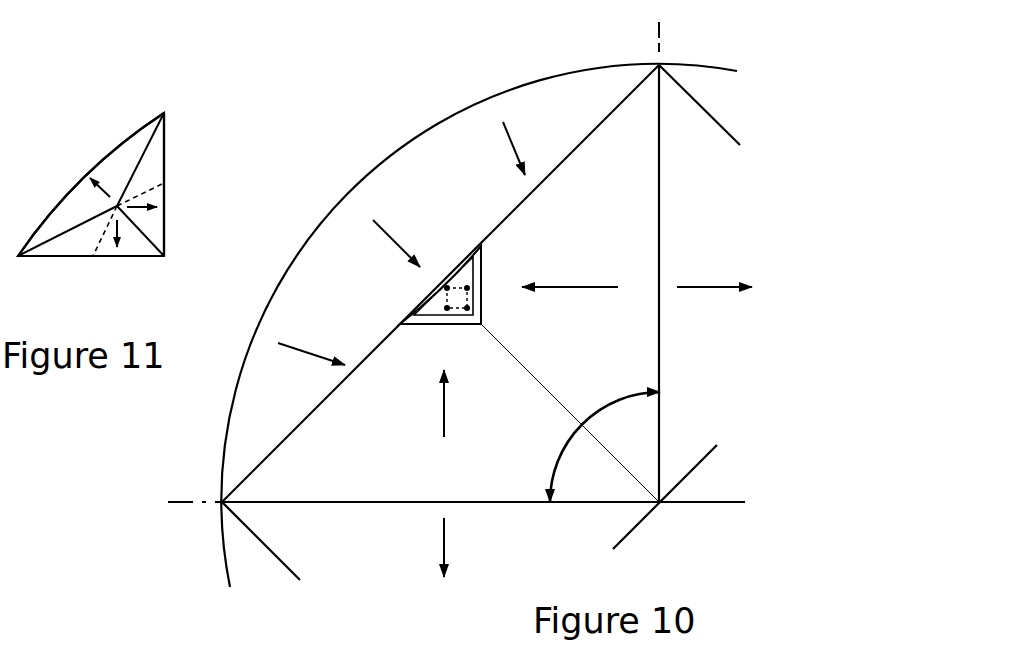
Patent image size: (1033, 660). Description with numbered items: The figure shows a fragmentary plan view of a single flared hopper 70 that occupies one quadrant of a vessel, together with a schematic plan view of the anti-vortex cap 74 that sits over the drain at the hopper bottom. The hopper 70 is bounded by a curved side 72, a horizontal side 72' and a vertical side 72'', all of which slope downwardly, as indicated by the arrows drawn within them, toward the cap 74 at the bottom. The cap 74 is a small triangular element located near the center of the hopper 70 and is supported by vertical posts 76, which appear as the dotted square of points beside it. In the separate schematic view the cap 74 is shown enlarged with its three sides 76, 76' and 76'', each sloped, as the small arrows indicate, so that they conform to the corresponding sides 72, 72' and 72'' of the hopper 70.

In FIG. 10, the hopper 70 is at (590, 234).
In FIG. 10, the side 72 is at (479, 302).
In FIG. 10, the side 72' is at (456, 528).
In FIG. 10, the side 72'' is at (697, 262).
In FIG. 10, the cap 74 is at (470, 275).
In FIG. 11, the cap 74 is at (126, 123).
In FIG. 10, the vertical post 76 is at (498, 308).
In FIG. 11, the side 76' is at (91, 213).
In FIG. 11, the side 76'' is at (199, 184).